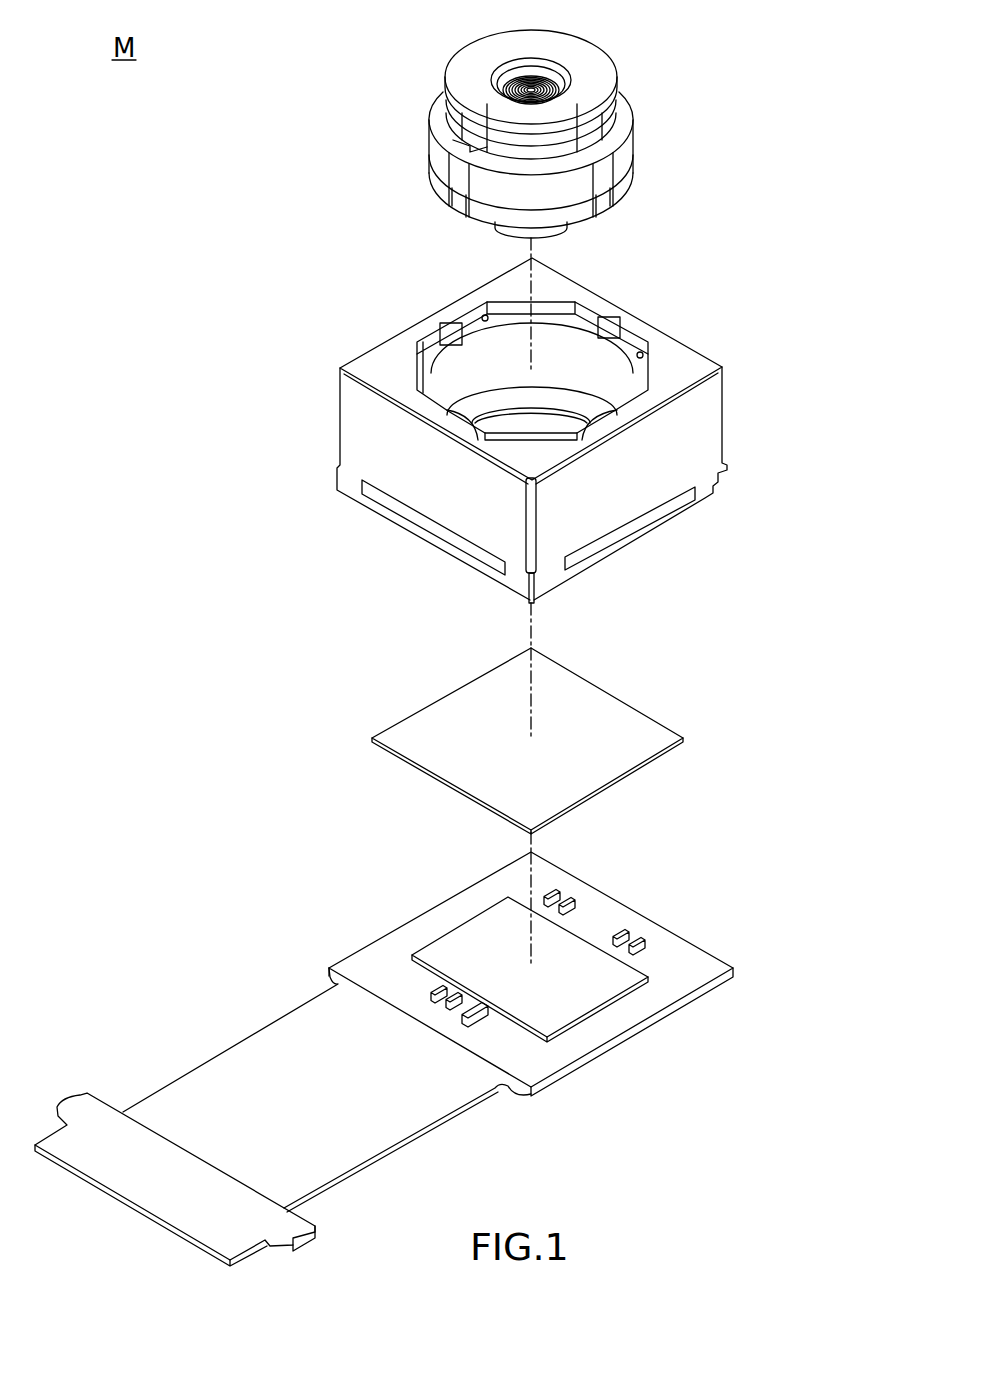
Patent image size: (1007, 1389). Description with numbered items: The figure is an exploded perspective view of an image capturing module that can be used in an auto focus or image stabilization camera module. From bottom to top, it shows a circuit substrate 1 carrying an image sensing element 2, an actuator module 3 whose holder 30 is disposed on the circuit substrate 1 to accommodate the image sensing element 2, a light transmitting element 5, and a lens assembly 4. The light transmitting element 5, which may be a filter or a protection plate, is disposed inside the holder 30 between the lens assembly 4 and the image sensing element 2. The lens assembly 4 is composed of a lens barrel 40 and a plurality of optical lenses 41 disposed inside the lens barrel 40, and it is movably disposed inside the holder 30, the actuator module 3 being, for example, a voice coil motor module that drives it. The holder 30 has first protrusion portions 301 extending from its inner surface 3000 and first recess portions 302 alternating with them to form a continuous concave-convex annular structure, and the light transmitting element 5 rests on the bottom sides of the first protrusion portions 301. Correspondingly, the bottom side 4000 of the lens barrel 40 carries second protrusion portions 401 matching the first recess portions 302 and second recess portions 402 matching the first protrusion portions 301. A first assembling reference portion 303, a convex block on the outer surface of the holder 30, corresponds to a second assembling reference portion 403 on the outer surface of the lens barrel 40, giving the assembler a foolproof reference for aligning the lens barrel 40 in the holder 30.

The circuit substrate 1 is at (260, 1042).
The image sensing element 2 is at (472, 930).
The actuator module 3 is at (709, 351).
The lens assembly 4 is at (628, 95).
The light transmitting element 5 is at (620, 700).
The holder 30 is at (473, 330).
The lens barrel 40 is at (624, 158).
The optical lenses 41 is at (548, 93).
The first protrusion portions 301 is at (448, 420).
The first recess portions 302 is at (553, 420).
The first assembling reference portion 303 is at (452, 415).
The second protrusion portions 401 is at (437, 197).
The second recess portions 402 is at (458, 222).
The second assembling reference portion 403 is at (457, 150).
The inner surface 3000 is at (453, 381).
The bottom side 4000 is at (513, 236).